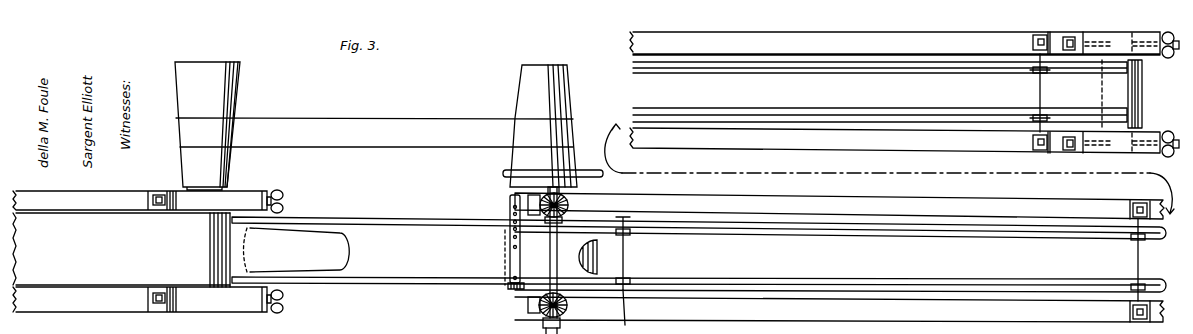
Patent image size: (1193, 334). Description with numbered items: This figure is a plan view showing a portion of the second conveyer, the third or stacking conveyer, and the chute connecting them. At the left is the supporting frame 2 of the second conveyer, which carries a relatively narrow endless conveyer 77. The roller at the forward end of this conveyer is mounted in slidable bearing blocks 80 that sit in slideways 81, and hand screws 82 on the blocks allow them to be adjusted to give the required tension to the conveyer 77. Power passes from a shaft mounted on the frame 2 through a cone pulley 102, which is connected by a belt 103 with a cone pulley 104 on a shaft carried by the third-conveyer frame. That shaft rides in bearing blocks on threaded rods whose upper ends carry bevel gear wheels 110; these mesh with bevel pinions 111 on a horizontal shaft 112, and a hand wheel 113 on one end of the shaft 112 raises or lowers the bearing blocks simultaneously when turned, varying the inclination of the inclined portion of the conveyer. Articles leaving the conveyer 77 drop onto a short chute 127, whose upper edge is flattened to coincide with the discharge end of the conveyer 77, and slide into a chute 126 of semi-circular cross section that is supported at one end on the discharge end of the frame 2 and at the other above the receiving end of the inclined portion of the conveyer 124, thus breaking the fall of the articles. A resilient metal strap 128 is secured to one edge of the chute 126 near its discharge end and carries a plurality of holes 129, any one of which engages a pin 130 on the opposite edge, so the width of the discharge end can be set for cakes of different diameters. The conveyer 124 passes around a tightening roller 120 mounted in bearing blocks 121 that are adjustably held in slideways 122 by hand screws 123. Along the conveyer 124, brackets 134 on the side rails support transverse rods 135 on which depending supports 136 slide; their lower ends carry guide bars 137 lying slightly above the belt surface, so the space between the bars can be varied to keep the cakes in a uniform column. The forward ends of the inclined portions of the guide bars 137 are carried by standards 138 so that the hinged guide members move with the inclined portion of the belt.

The supporting frame of the second conveyer 2 is at (90, 197).
The endless conveyer 77 is at (121, 273).
The slidable bearing blocks 80 is at (207, 318).
The slideways 81 is at (187, 295).
The hand screws 82 is at (282, 194).
The cone pulley 102 is at (238, 100).
The belt 103 is at (348, 128).
The cone pulley 104 is at (530, 88).
The bevel gear wheels 110 is at (530, 308).
The bevel pinions 111 is at (540, 319).
The horizontal shaft 112 is at (572, 236).
The hand wheel 113 is at (503, 171).
The roller 120 is at (1100, 92).
The bearing blocks 121 is at (1137, 24).
The slideways 122 is at (1097, 33).
The hand screws 123 is at (1172, 128).
The conveyer 124 is at (633, 92).
The chute 126 is at (373, 250).
The short chute 127 is at (297, 250).
The resilient metal strap 128 is at (515, 266).
The holes 129 is at (509, 208).
The pin 130 is at (507, 239).
The brackets 134 is at (1044, 36).
The transverse rods 135 is at (629, 254).
The depending supports 136 is at (1038, 67).
The guide bars 137 is at (915, 264).
The standards 138 is at (640, 312).